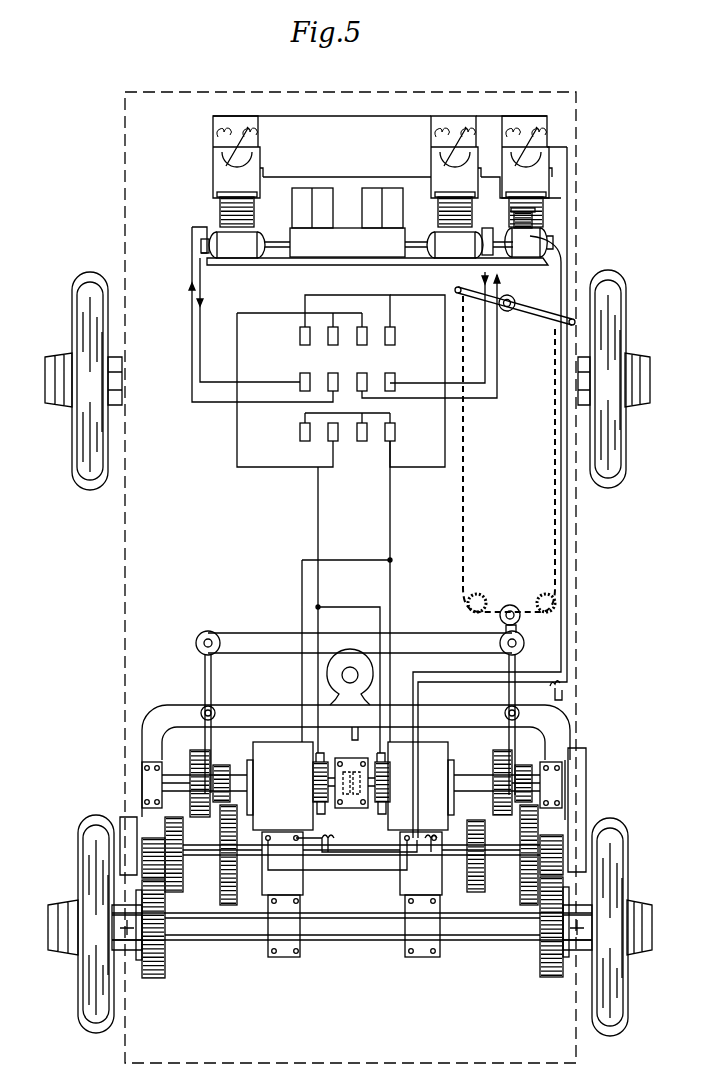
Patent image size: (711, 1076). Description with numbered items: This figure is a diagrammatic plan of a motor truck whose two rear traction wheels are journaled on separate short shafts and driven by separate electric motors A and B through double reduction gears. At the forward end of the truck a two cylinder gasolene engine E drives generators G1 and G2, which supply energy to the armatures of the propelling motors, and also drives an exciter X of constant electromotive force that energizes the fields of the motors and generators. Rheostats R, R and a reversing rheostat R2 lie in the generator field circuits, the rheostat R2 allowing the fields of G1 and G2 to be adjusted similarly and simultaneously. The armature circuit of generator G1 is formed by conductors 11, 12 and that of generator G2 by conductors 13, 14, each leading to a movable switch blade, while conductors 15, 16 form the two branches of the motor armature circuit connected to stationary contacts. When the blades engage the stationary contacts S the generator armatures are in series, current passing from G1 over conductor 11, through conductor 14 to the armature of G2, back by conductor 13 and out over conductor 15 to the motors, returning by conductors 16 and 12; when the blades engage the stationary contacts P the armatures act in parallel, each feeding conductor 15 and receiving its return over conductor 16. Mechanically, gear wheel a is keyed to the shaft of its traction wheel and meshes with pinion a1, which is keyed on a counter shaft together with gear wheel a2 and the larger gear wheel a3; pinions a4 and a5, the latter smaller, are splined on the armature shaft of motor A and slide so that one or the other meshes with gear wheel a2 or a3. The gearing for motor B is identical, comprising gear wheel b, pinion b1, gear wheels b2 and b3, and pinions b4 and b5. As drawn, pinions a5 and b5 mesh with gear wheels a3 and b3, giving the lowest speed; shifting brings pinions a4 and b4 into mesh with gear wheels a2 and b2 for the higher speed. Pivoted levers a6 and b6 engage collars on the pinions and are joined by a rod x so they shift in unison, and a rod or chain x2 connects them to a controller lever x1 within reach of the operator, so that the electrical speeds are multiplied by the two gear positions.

The rheostat R is at (347, 171).
The reversing rheostat R2 is at (532, 171).
The generator G1 is at (233, 245).
The generator G2 is at (460, 243).
The two cylinder gasolene engine E is at (347, 222).
The exciter X is at (525, 232).
The conductor 11 is at (203, 290).
The conductor 12 is at (190, 284).
The conductor 13 is at (484, 290).
The conductor 14 is at (498, 346).
The conductor 15 is at (445, 352).
The conductor 16 is at (237, 352).
The stationary contacts P is at (316, 320).
The stationary contacts S is at (336, 427).
The rod x is at (360, 635).
The shifting or controller lever x1 is at (515, 306).
The rod or chain x2 is at (509, 460).
The electric motor A is at (280, 786).
The electric motor B is at (421, 786).
The gear wheel a is at (150, 940).
The pinion a1 is at (153, 848).
The gear wheel a2 is at (184, 859).
The gear wheel a3 is at (238, 856).
The pinion a4 is at (196, 780).
The pinion a5 is at (226, 772).
The pivoted lever a6 is at (217, 724).
The gear wheel b is at (554, 939).
The pinion b1 is at (551, 845).
The gear wheel b2 is at (485, 856).
The gear wheel b3 is at (520, 857).
The pinion b4 is at (496, 776).
The pinion b5 is at (524, 774).
The pivoted lever b6 is at (521, 725).